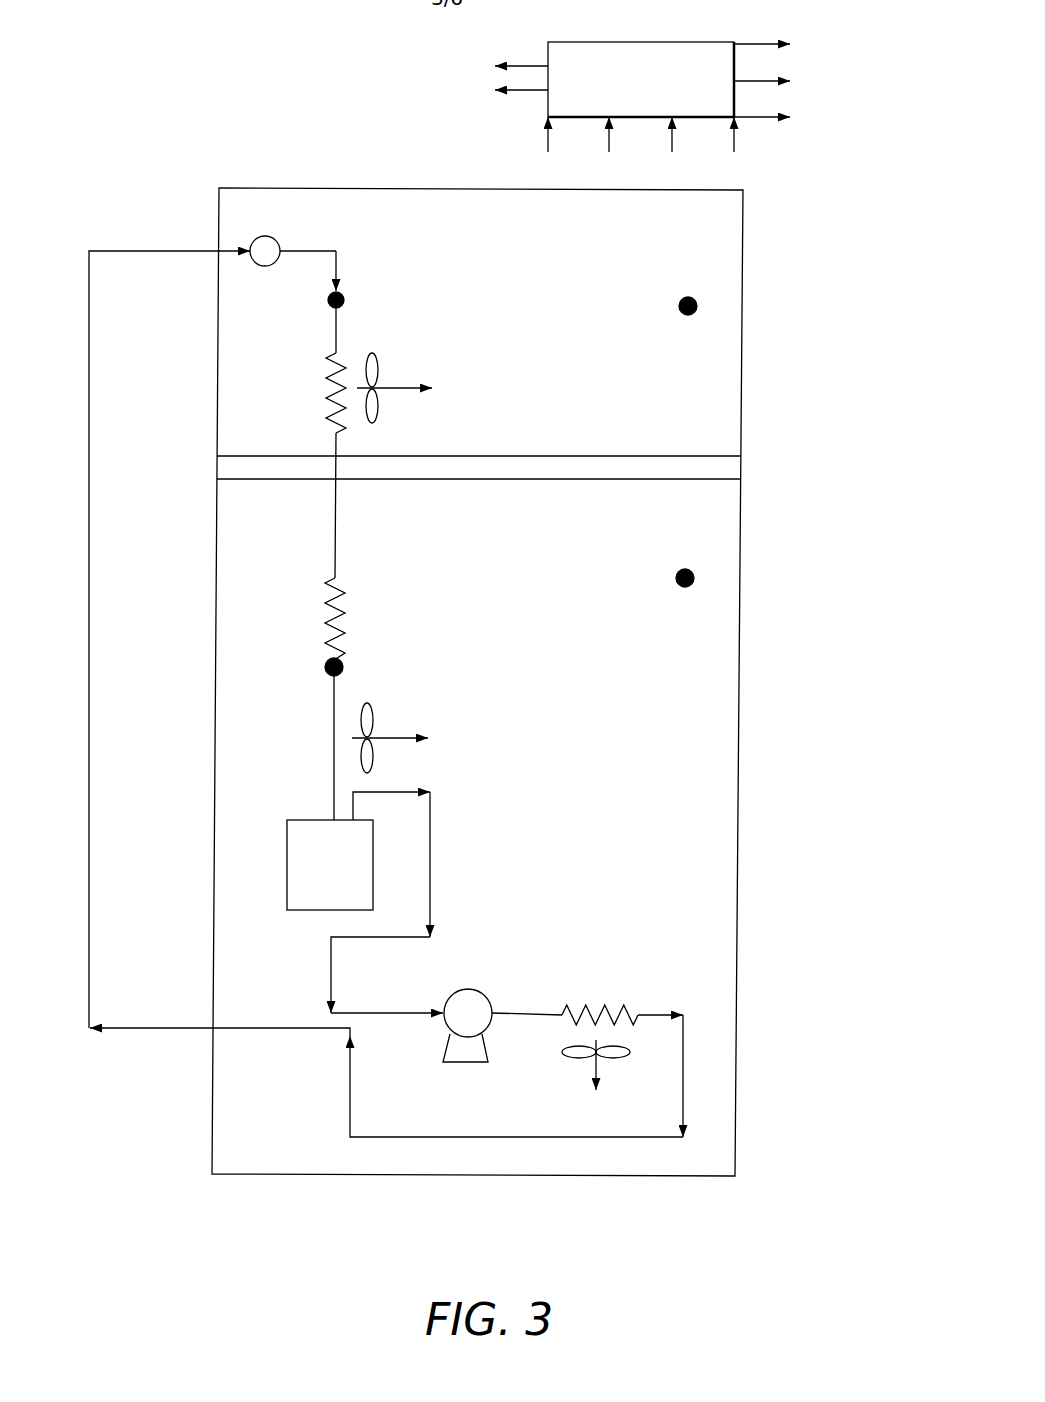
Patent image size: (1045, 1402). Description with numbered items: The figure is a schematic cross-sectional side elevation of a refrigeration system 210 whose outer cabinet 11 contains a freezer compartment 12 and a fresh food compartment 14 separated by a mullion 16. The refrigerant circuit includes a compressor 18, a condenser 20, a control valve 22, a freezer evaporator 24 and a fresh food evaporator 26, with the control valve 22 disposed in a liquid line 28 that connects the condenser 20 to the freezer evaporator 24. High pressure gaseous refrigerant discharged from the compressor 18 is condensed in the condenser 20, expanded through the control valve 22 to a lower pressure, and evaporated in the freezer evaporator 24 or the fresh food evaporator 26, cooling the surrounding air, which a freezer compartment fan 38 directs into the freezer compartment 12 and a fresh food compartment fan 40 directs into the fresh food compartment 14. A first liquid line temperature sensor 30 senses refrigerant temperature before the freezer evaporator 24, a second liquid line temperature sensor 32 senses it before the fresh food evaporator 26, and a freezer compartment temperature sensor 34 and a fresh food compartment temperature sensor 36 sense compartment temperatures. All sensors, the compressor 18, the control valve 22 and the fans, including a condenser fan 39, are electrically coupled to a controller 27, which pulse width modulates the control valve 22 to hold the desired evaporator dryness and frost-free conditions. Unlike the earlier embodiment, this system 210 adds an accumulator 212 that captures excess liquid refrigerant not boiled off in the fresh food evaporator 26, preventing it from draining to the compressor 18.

The refrigeration system 210 is at (100, 95).
The outer cabinet 11 is at (743, 358).
The freezer compartment 12 is at (523, 244).
The fresh food compartment 14 is at (516, 533).
The mullion 16 is at (494, 455).
The compressor 18 is at (467, 1025).
The condenser 20 is at (600, 1010).
The control valve 22 is at (260, 236).
The freezer evaporator 24 is at (327, 407).
The fresh food evaporator 26 is at (330, 737).
The controller 27 is at (637, 42).
The liquid line 28 is at (90, 473).
The first liquid line temperature sensor 30 is at (345, 293).
The second liquid line temperature sensor 32 is at (342, 662).
The freezer compartment temperature sensor 34 is at (680, 298).
The fresh food compartment temperature sensor 36 is at (677, 574).
The freezer compartment fan 38 is at (377, 362).
The condenser fan 39 is at (565, 1055).
The fresh food compartment fan 40 is at (372, 708).
The accumulator 212 is at (330, 865).